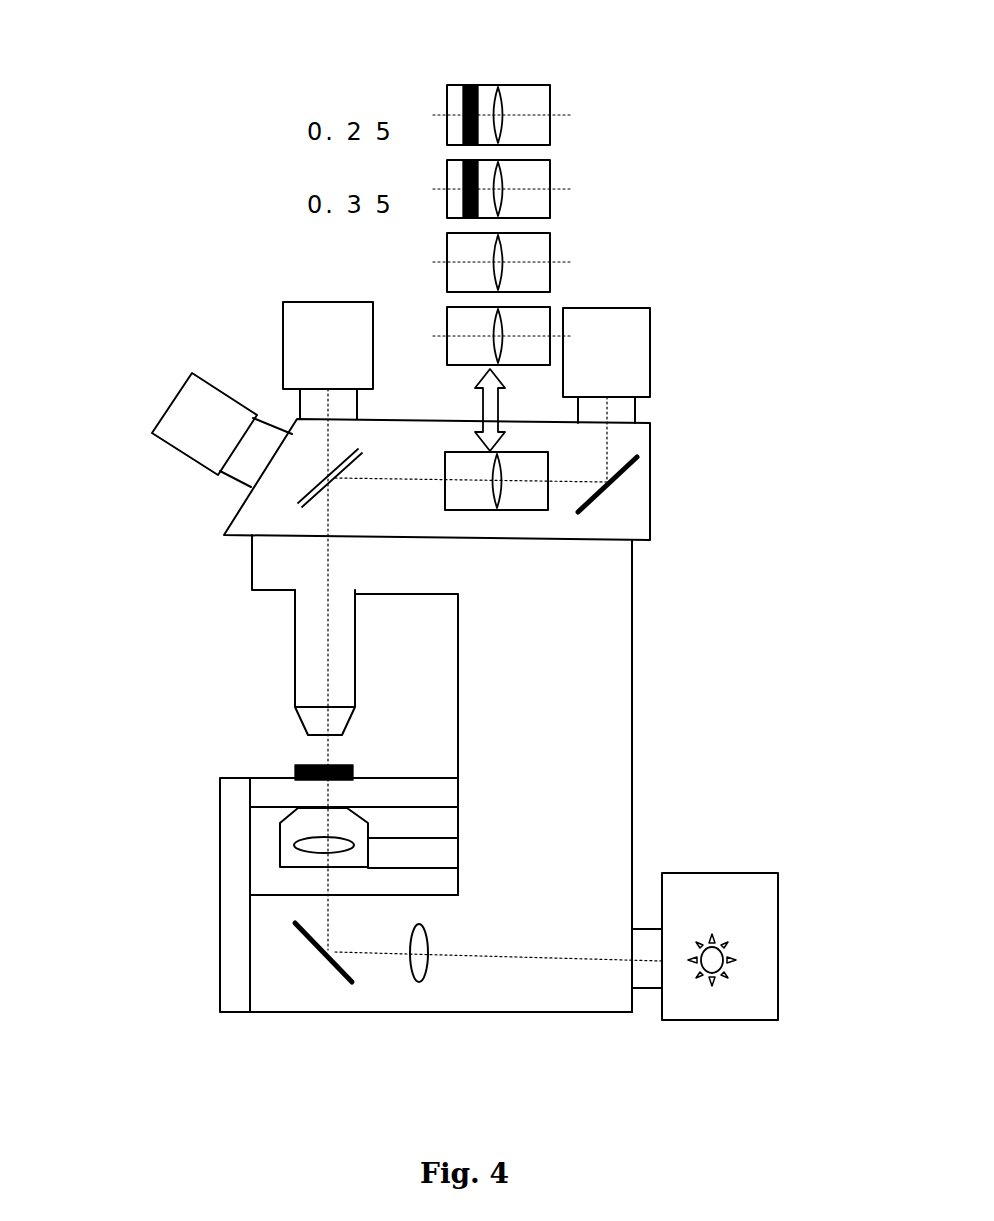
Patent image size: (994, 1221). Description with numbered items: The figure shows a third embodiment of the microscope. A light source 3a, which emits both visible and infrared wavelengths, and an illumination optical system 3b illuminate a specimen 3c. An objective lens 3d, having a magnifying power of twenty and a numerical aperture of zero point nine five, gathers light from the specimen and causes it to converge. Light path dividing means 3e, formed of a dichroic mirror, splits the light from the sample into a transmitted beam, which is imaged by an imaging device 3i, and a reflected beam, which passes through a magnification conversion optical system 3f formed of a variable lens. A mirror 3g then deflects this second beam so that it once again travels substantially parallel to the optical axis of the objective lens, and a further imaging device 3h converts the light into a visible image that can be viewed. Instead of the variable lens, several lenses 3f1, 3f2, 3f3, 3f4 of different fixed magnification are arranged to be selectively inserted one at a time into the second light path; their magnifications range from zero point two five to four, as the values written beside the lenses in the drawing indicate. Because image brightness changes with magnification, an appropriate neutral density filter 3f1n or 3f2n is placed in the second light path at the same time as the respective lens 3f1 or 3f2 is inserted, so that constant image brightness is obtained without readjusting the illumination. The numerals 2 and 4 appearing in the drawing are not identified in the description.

The filter unit slide direction 2 is at (444, 358).
The camera mount 4 is at (350, 377).
The light source 3a is at (718, 990).
The illumination optical system 3b is at (310, 852).
The specimen 3c is at (293, 765).
The objective lens 3d is at (293, 650).
The light path dividing means 3e is at (328, 470).
The magnification conversion optical system 3f is at (520, 512).
The lens 3f1 is at (537, 102).
The lens 3f2 is at (537, 177).
The lens 3f3 is at (520, 248).
The lens 3f4 is at (520, 322).
The neutral density filter 3f1n is at (465, 93).
The neutral density filter 3f2n is at (465, 175).
The mirror 3g is at (612, 492).
The imaging device 3h is at (622, 338).
The imaging device 3i is at (313, 330).